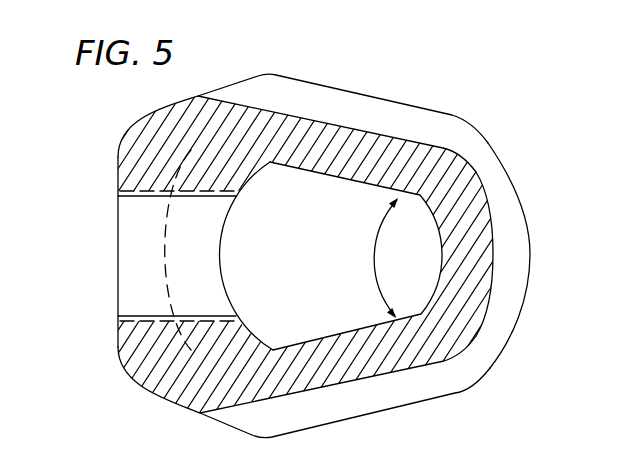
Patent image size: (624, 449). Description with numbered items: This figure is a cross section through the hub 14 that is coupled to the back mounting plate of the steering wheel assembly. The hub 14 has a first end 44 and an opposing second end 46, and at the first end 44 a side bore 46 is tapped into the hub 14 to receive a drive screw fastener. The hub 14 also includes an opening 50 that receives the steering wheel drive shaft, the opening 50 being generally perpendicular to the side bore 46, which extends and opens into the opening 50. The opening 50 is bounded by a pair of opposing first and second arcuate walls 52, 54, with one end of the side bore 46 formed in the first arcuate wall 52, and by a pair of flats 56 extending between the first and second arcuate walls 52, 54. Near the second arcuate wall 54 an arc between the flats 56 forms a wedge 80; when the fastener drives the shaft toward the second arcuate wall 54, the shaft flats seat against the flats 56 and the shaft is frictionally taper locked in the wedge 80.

The hub 14 is at (312, 227).
The first end 44 is at (118, 171).
The side bore 46 is at (530, 247).
The opening 50 is at (273, 326).
The first arcuate wall 52 is at (220, 231).
The second arcuate wall 54 is at (455, 239).
The flats 56 is at (427, 427).
The wedge 80 is at (385, 219).